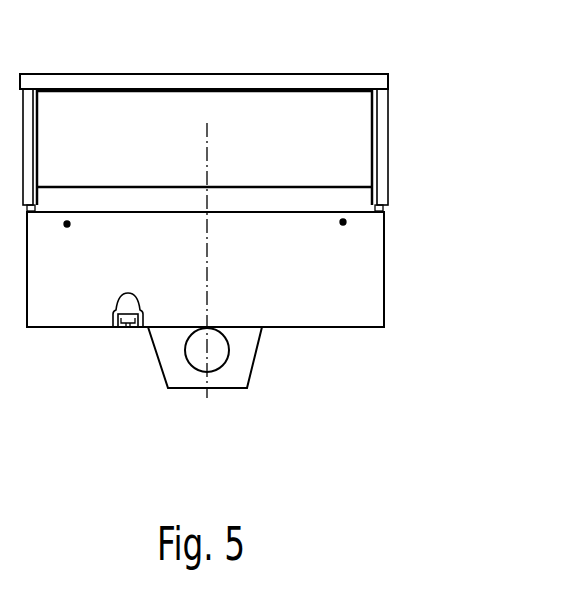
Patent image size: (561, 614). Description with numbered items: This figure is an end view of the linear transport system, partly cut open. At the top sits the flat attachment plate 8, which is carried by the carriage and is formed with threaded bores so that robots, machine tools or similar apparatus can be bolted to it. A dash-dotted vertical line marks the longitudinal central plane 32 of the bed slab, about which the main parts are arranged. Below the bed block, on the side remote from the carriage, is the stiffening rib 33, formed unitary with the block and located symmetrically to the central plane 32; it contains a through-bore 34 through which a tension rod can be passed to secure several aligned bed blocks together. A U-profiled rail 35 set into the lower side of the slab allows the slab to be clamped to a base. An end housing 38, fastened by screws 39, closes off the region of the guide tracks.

The attachment plate 8 is at (307, 86).
The longitudinal central plane 32 is at (207, 146).
The stiffening rib 33 is at (240, 367).
The through-bore 34 is at (202, 360).
The U-profiled rail 35 is at (128, 328).
The end housing 38 is at (367, 280).
The screw 39 is at (343, 222).